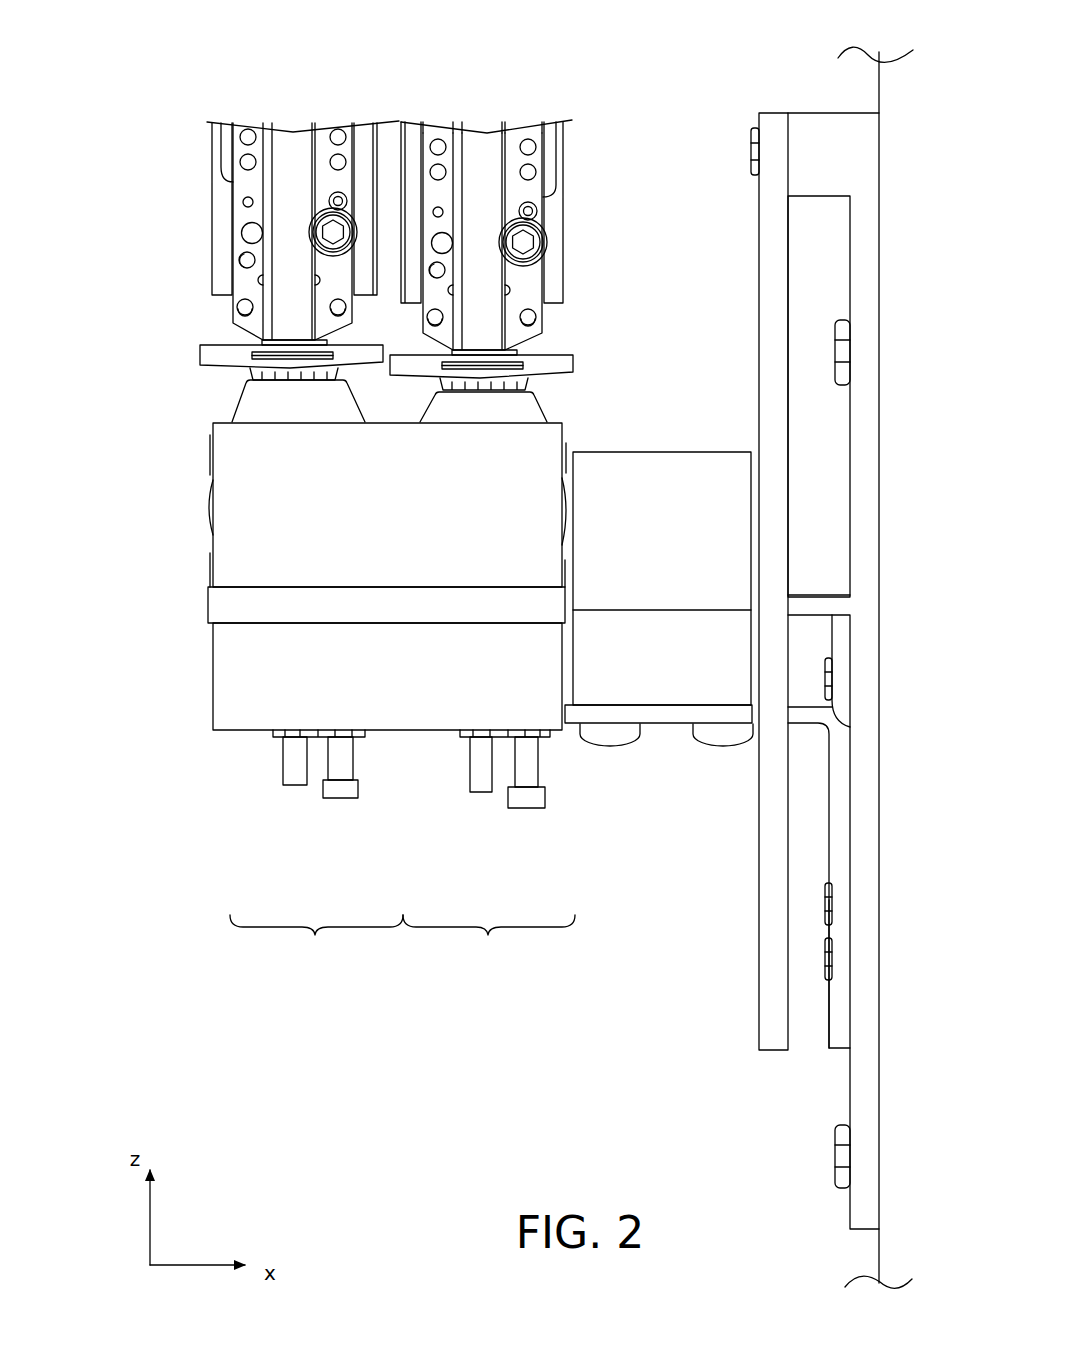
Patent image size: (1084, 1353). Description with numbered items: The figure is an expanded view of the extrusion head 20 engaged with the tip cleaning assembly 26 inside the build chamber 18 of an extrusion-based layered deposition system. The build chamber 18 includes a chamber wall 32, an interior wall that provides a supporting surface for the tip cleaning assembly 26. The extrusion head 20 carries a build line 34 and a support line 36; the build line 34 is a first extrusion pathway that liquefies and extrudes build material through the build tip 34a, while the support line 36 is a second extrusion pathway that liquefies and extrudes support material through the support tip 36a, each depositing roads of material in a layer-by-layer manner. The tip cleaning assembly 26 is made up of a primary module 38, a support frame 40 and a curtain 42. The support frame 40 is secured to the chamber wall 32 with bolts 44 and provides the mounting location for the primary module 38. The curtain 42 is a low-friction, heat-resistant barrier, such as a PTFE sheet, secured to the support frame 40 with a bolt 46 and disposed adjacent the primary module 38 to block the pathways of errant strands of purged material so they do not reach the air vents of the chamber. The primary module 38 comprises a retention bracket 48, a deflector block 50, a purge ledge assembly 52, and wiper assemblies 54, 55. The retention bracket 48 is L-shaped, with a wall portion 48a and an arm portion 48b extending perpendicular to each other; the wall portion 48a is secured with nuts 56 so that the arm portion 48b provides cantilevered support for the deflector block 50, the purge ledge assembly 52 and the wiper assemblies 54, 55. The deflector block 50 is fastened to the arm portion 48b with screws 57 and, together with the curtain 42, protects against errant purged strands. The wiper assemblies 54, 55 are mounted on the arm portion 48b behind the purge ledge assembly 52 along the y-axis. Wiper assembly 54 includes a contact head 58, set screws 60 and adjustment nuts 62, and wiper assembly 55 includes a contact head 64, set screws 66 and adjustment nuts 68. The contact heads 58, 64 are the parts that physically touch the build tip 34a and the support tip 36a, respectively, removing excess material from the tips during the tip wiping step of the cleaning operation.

The build chamber 18 is at (419, 1010).
The extrusion head 20 is at (598, 57).
The tip cleaning assembly 26 is at (190, 940).
The chamber wall 32 is at (878, 99).
The build line 34 is at (290, 128).
The build tip 34a is at (238, 384).
The support line 36 is at (487, 130).
The support tip 36a is at (532, 388).
The primary module 38 is at (200, 735).
The support frame 40 is at (850, 456).
The curtain 42 is at (758, 268).
The bolts 44 is at (835, 340).
The bolt 46 is at (752, 155).
The retention bracket 48 is at (852, 768).
The wall portion 48a is at (838, 1040).
The arm portion 48b is at (670, 725).
The deflector block 50 is at (664, 462).
The purge ledge assembly 52 is at (218, 604).
The wiper assembly 54 is at (316, 940).
The wiper assembly 55 is at (489, 938).
The nuts 56 is at (826, 681).
The screws 57 is at (640, 742).
The contact head 58 is at (237, 400).
The set screws 60 is at (340, 768).
The adjustment nuts 62 is at (277, 737).
The contact head 64 is at (548, 405).
The set screws 66 is at (524, 773).
The adjustment nuts 68 is at (458, 737).